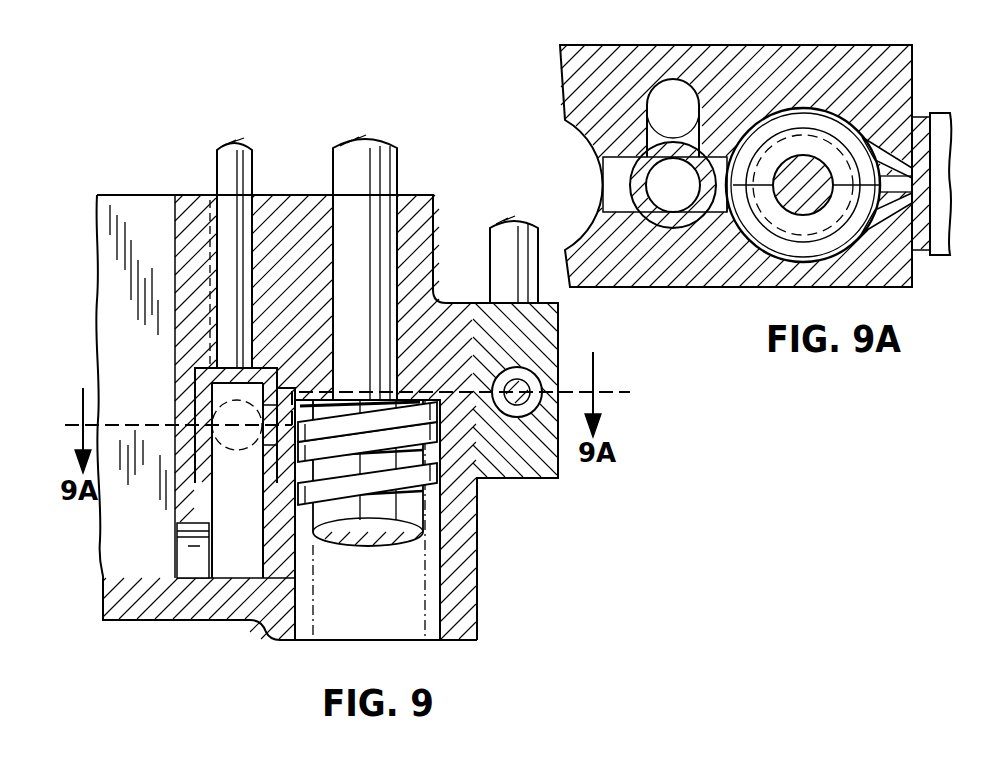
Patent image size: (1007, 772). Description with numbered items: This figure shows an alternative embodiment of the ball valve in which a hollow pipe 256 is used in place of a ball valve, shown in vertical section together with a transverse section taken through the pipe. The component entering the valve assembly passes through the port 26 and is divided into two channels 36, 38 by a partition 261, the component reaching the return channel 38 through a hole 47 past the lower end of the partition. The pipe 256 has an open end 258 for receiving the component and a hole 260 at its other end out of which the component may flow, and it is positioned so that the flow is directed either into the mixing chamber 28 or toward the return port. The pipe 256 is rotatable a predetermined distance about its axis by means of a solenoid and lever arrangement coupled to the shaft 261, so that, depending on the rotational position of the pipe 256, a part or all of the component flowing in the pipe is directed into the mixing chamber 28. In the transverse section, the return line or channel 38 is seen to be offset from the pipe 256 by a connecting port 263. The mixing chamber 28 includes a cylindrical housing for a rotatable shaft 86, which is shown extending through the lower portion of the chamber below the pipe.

In FIG. 9, the port 26 is at (288, 447).
In FIG. 9A, the port 26 is at (717, 207).
In FIG. 9, the mixing chamber 28 is at (388, 597).
In FIG. 9, the channel 36 is at (131, 212).
In FIG. 9A, the channel 36 is at (600, 168).
In FIG. 9, the channel 38 is at (205, 210).
In FIG. 9A, the channel 38 is at (680, 90).
In FIG. 9, the hole 47 is at (186, 563).
In FIG. 9, the rotatable shaft 86 is at (412, 503).
In FIG. 9A, the rotatable shaft 86 is at (828, 118).
In FIG. 9, the hollow pipe 256 is at (208, 440).
In FIG. 9A, the hollow pipe 256 is at (665, 194).
In FIG. 9, the open end 258 is at (252, 478).
In FIG. 9A, the open end 258 is at (634, 188).
In FIG. 9, the hole 260 is at (295, 388).
In FIG. 9A, the hole 260 is at (803, 185).
In FIG. 9, the shaft 261 is at (232, 238).
In FIG. 9, the connecting port 263 is at (192, 390).
In FIG. 9A, the connecting port 263 is at (650, 134).